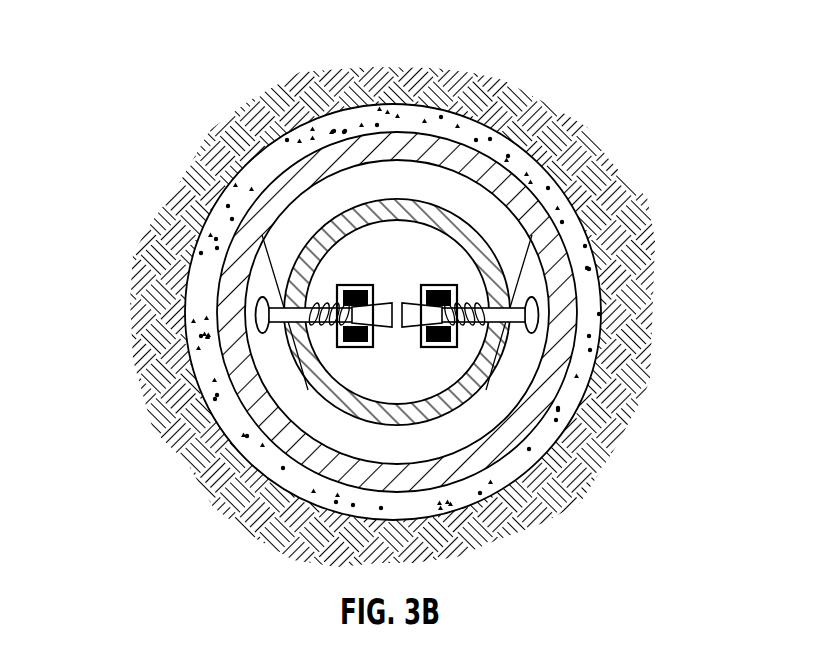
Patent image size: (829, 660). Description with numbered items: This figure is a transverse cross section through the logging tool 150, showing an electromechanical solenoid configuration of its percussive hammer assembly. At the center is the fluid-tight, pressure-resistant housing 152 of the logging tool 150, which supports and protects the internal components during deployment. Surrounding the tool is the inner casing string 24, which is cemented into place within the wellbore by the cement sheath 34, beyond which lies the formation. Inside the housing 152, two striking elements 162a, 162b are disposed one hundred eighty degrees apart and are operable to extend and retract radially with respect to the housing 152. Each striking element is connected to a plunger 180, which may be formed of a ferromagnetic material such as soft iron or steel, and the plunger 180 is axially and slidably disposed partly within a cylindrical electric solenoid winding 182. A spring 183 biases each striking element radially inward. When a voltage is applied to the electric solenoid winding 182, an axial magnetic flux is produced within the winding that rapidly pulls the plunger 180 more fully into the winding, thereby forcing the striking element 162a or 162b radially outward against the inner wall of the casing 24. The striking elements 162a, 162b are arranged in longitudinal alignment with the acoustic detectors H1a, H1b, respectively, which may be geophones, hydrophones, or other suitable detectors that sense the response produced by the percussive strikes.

The cement sheath 34 is at (230, 187).
The inner casing string 24 is at (567, 245).
The logging tool 150 is at (463, 218).
The housing 152 is at (500, 395).
The plunger 180 is at (373, 286).
The electric solenoid winding 182 is at (358, 347).
The spring 183 is at (567, 198).
The striking element 162a is at (540, 316).
The striking element 162b is at (257, 315).
The acoustic detector H1a is at (540, 327).
The acoustic detector H1b is at (257, 325).